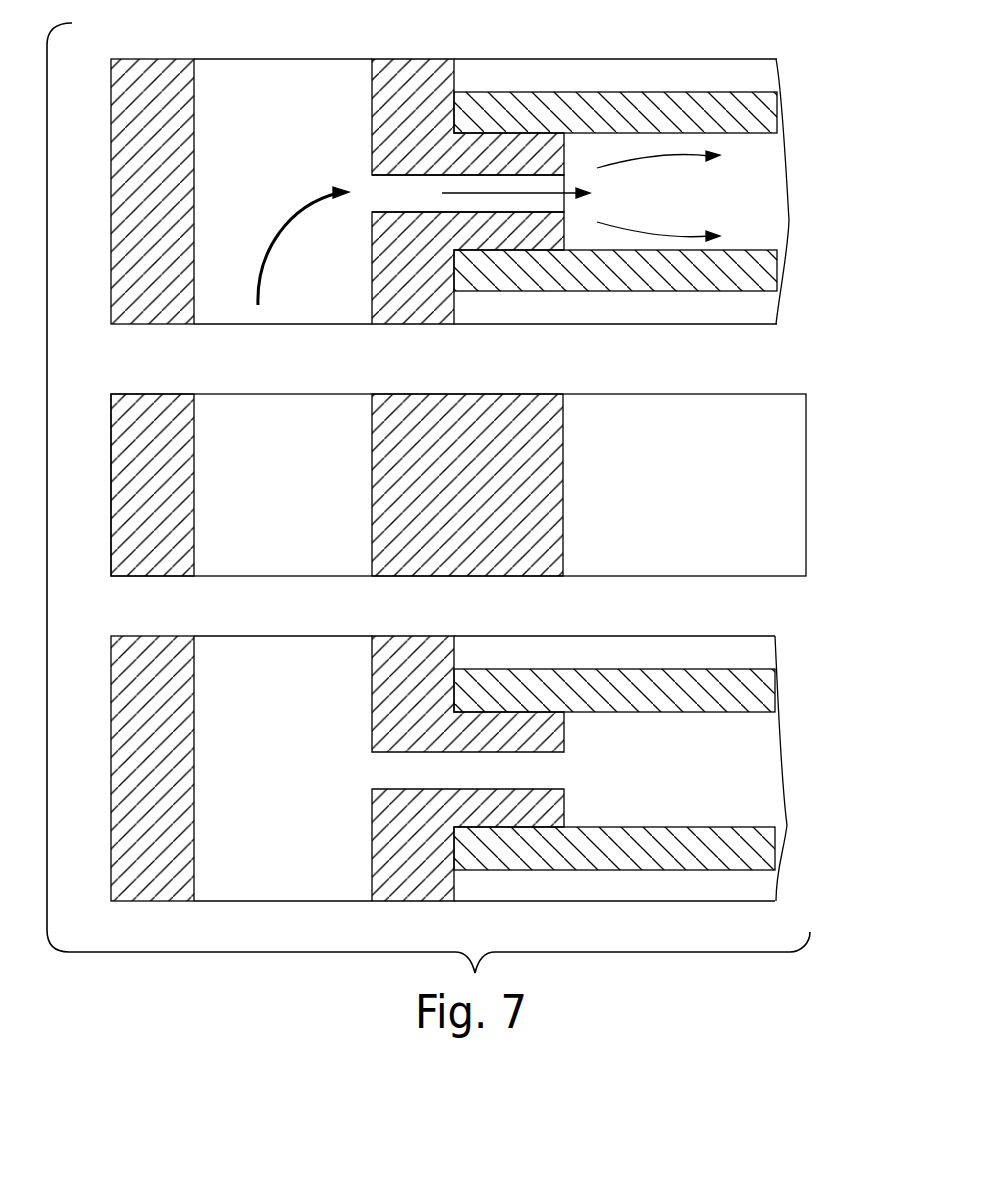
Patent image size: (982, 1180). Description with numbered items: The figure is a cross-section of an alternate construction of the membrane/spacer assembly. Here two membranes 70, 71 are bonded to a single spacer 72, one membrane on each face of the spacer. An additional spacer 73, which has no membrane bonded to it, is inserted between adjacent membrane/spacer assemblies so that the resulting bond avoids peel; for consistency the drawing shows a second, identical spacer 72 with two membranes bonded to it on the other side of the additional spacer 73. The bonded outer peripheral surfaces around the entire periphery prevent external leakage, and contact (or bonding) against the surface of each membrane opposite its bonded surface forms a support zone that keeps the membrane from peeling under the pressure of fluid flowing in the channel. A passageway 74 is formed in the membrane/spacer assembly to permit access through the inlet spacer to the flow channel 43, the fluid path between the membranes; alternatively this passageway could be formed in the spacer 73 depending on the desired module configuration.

The flow channel 43 is at (757, 168).
The membrane 70 is at (587, 97).
The membrane 71 is at (580, 290).
The spacer 72 is at (392, 62).
The additional spacer 73 is at (110, 555).
The passageway 74 is at (378, 205).